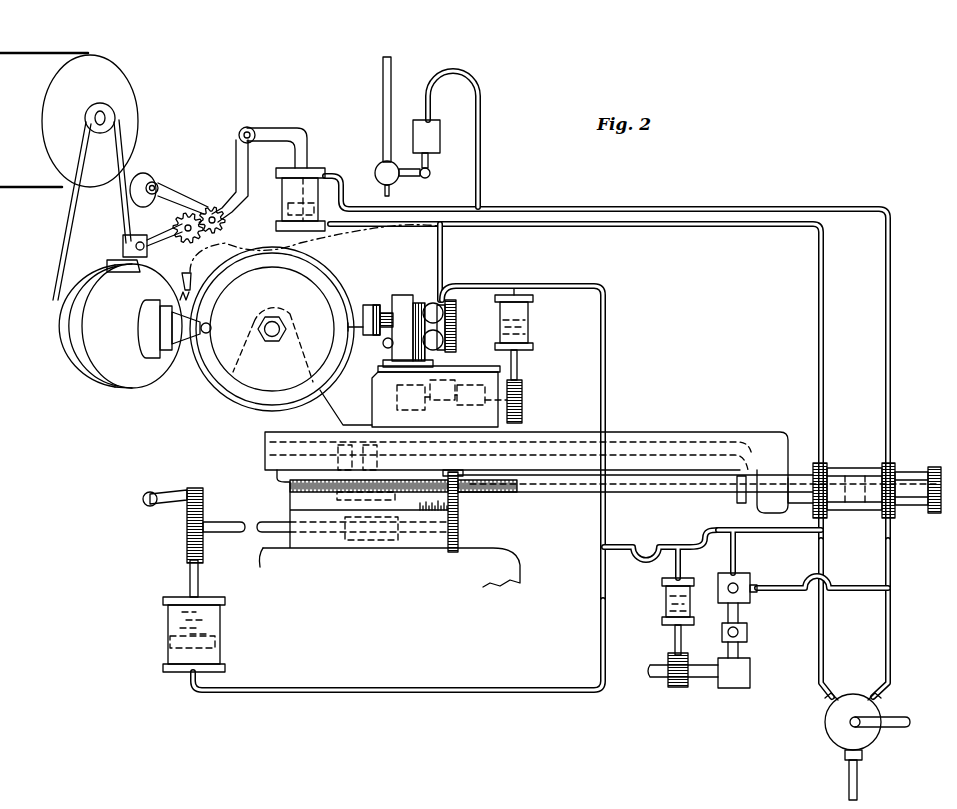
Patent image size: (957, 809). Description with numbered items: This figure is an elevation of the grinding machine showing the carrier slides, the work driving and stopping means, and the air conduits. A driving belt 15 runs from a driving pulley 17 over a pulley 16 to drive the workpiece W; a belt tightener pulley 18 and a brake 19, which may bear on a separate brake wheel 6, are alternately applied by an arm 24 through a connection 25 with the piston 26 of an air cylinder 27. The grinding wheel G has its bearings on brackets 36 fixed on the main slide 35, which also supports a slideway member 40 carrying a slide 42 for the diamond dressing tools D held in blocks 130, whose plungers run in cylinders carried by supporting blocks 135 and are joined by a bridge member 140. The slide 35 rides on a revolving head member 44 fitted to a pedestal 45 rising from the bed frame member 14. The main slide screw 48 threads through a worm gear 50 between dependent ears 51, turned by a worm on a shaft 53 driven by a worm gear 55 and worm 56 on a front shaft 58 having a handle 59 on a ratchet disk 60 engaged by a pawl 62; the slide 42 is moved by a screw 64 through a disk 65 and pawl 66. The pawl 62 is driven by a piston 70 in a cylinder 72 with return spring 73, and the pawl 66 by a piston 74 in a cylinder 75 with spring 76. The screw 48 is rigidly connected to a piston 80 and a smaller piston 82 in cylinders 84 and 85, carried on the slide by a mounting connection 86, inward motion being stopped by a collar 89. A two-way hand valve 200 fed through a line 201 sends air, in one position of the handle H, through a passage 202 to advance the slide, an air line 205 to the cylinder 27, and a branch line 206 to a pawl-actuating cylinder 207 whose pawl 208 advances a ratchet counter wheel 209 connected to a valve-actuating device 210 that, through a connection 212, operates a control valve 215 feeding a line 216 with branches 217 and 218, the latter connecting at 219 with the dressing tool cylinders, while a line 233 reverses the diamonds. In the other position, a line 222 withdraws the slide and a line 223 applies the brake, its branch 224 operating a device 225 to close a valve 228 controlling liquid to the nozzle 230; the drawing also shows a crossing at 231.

The brake wheel 6 is at (122, 372).
The bed frame member 14 is at (498, 550).
The driving belt 15 is at (62, 226).
The pulley 16 is at (75, 287).
The driving pulley 17 is at (106, 112).
The belt tightener pulley 18 is at (151, 176).
The brake 19 is at (108, 258).
The arm 24 is at (234, 171).
The connection 25 is at (270, 131).
The piston 26 is at (288, 212).
The air cylinder 27 is at (313, 186).
The main slide 35 is at (718, 430).
The brackets 36 is at (327, 405).
The mounting bracket or slideway member 40 is at (380, 425).
The slide 42 is at (460, 366).
The revolving head member 44 is at (460, 497).
The pedestal 45 is at (458, 520).
The main slide screw 48 is at (560, 494).
The worm gear 50 is at (395, 465).
The dependent ears 51 is at (440, 460).
The shaft 53 is at (370, 545).
The worm gear 55 is at (405, 548).
The worm 56 is at (357, 545).
The shaft 58 is at (228, 520).
The handle 59 is at (151, 492).
The disk or wheel 60 is at (186, 540).
The actuating pawl 62 is at (190, 570).
The screw 64 is at (452, 402).
The disk 65 is at (524, 408).
The pawl 66 is at (522, 367).
The piston 70 is at (168, 645).
The cylinder 72 is at (222, 648).
The spring 73 is at (205, 620).
The piston 74 is at (528, 318).
The cylinder 75 is at (533, 303).
The spring 76 is at (530, 336).
The piston 80 is at (843, 470).
The piston 82 is at (915, 480).
The cylinder 84 is at (835, 514).
The oil cylinder 85 is at (920, 508).
The mounting connection 86 is at (802, 470).
The collar 89 is at (736, 491).
The blocks 130 is at (369, 302).
The supporting blocks 135 is at (403, 298).
The bridge member 140 is at (455, 331).
The two-way hand valve 200 is at (838, 730).
The line 201 is at (857, 778).
The passage 202 is at (823, 630).
The air line 205 is at (652, 227).
The branch line 206 is at (758, 533).
The pawl-actuating cylinder 207 is at (664, 611).
The pawl 208 is at (676, 641).
The ratchet counter wheel 209 is at (668, 690).
The valve-actuating device 210 is at (730, 688).
The connection 212 is at (738, 618).
The control valve 215 is at (740, 588).
The line 216 is at (700, 549).
The branch 217 is at (503, 688).
The branch 218 is at (607, 414).
The connection 219 is at (472, 291).
The line 222 is at (890, 651).
The line 223 is at (648, 212).
The branch 224 is at (481, 159).
The piston and cylinder device 225 is at (410, 135).
The valve 228 is at (383, 82).
The nozzle 230 is at (192, 283).
The pipe crossing 231 is at (866, 566).
The line 233 is at (438, 255).
The diamond dressing tools D is at (361, 339).
The grinding wheel G is at (253, 408).
The valve handle H is at (897, 727).
The workpiece W is at (178, 347).